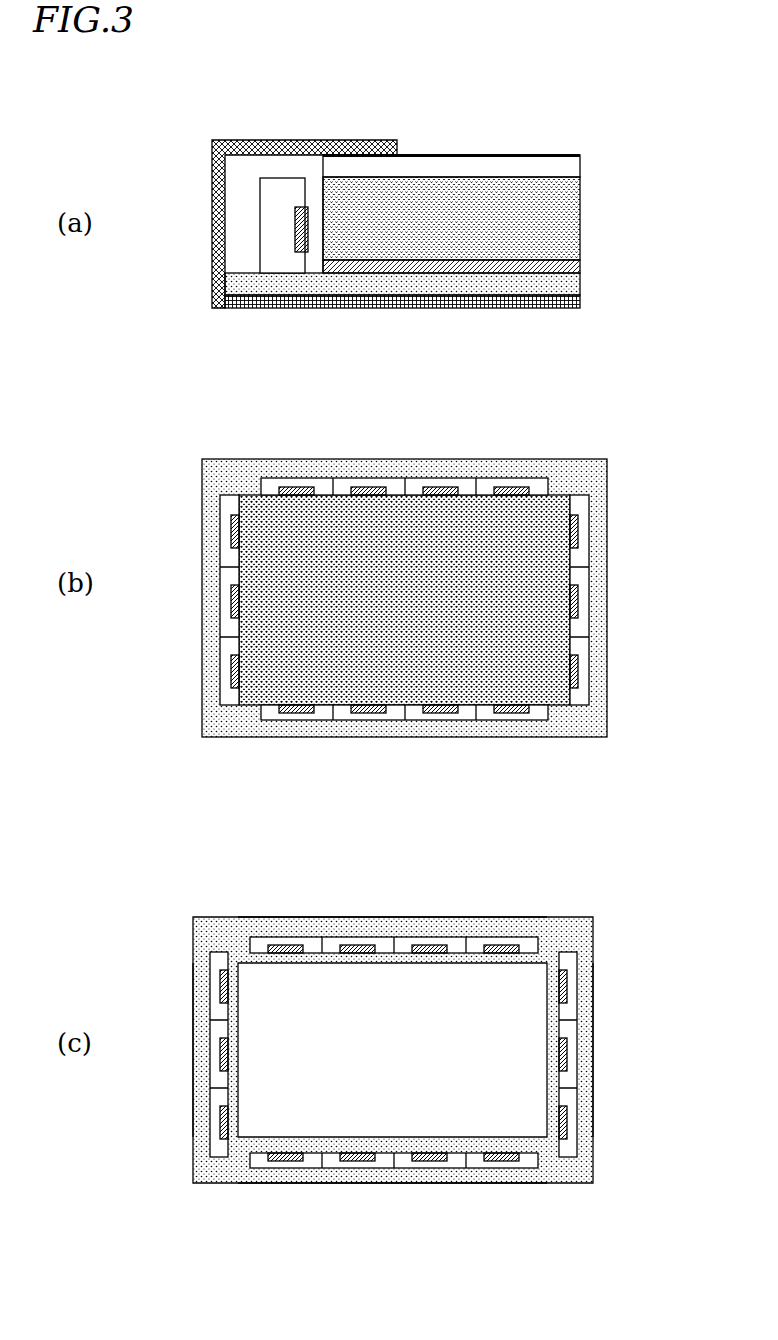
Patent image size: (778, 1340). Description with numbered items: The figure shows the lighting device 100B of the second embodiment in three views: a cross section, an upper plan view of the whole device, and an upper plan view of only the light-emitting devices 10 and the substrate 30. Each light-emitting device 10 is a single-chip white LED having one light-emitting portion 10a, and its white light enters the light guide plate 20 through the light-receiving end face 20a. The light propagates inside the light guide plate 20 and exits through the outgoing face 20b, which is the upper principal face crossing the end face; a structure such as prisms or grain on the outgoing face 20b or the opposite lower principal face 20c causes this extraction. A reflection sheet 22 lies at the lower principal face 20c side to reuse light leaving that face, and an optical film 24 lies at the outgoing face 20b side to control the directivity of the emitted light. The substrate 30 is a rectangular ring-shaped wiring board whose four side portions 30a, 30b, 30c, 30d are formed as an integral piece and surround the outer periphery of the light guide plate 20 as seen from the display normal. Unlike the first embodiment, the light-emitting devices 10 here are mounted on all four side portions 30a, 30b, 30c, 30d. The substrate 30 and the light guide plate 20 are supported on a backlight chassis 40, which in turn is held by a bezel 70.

The light-emitting device 10 is at (278, 242).
The light-emitting portion 10a is at (298, 223).
The light guide plate 20 is at (560, 222).
The light-receiving end face 20a is at (322, 217).
The outgoing face 20b is at (452, 177).
The lower principal face 20c is at (452, 273).
The reflection sheet 22 is at (580, 268).
The optical film 24 is at (565, 167).
The substrate 30 is at (282, 308).
The side portion 30a is at (200, 1036).
The side portion 30b is at (378, 1185).
The side portion 30c is at (580, 1040).
The side portion 30d is at (380, 926).
The backlight chassis 40 is at (360, 308).
The bezel 70 is at (250, 140).
The lighting device 100B is at (600, 127).